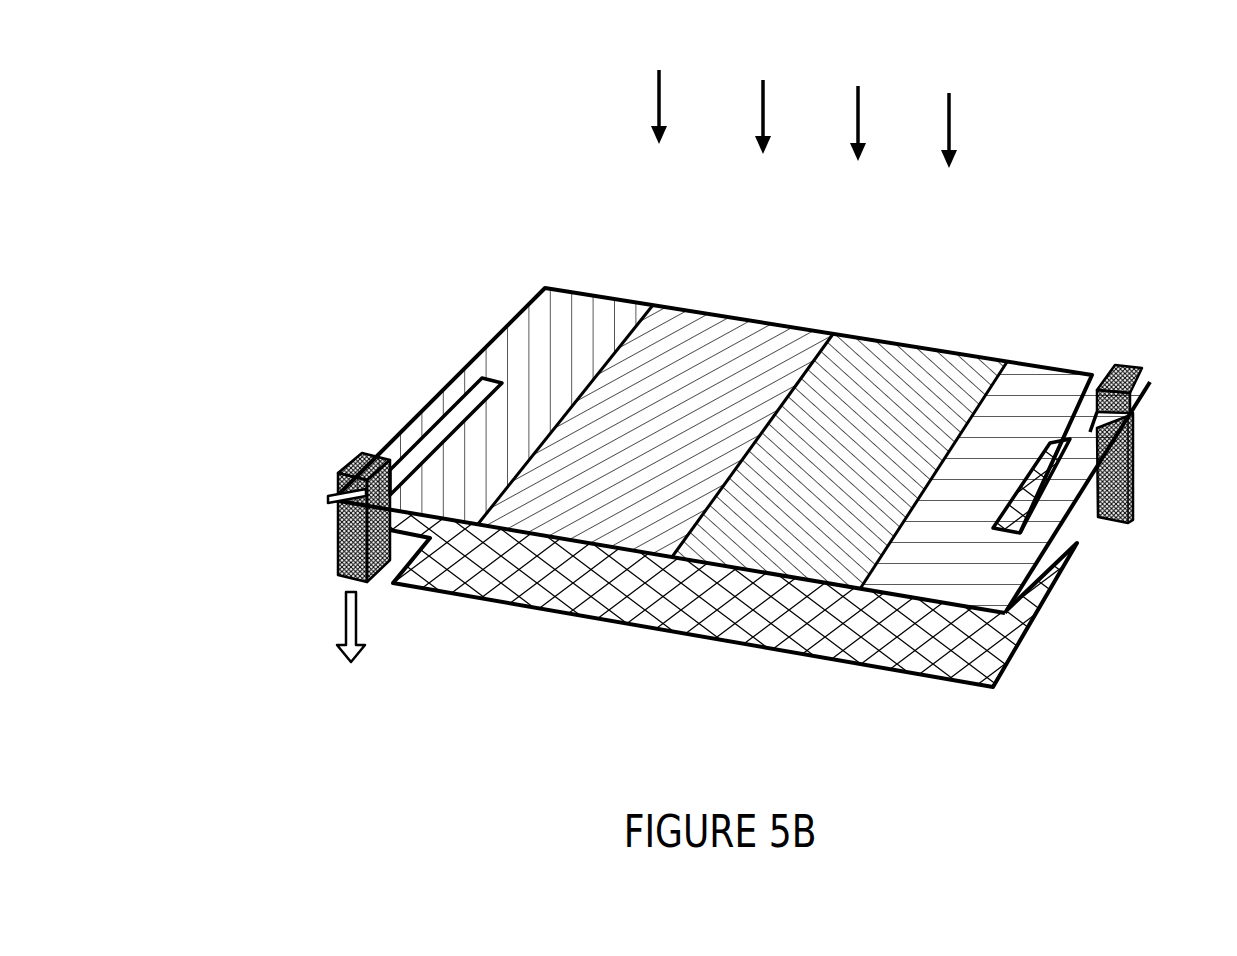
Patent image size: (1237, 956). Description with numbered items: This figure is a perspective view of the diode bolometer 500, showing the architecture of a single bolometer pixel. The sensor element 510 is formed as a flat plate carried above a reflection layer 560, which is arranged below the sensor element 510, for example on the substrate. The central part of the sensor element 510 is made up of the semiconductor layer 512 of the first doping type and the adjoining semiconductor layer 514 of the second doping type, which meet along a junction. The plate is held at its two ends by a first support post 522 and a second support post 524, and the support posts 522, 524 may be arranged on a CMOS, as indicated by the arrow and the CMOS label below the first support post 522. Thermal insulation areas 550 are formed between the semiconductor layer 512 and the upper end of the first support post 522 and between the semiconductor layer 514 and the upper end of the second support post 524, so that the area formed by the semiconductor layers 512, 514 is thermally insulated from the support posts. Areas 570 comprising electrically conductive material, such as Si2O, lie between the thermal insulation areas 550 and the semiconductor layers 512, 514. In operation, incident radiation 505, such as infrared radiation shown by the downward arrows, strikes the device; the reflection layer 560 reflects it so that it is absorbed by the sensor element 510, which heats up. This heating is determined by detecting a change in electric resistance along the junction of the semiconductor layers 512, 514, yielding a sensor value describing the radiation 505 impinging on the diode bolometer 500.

The diode bolometer 500 is at (247, 191).
The incident radiation 505 is at (984, 106).
The sensor element 510 is at (750, 421).
The semiconductor layer of the first doping type 512 is at (670, 347).
The semiconductor layer of the second doping type 514 is at (853, 373).
The first support post 522 is at (334, 483).
The second support post 524 is at (1124, 370).
The thermal insulation areas 550 is at (418, 412).
The reflection layer 560 is at (680, 625).
The areas comprising electrically conductive material 570 is at (552, 320).